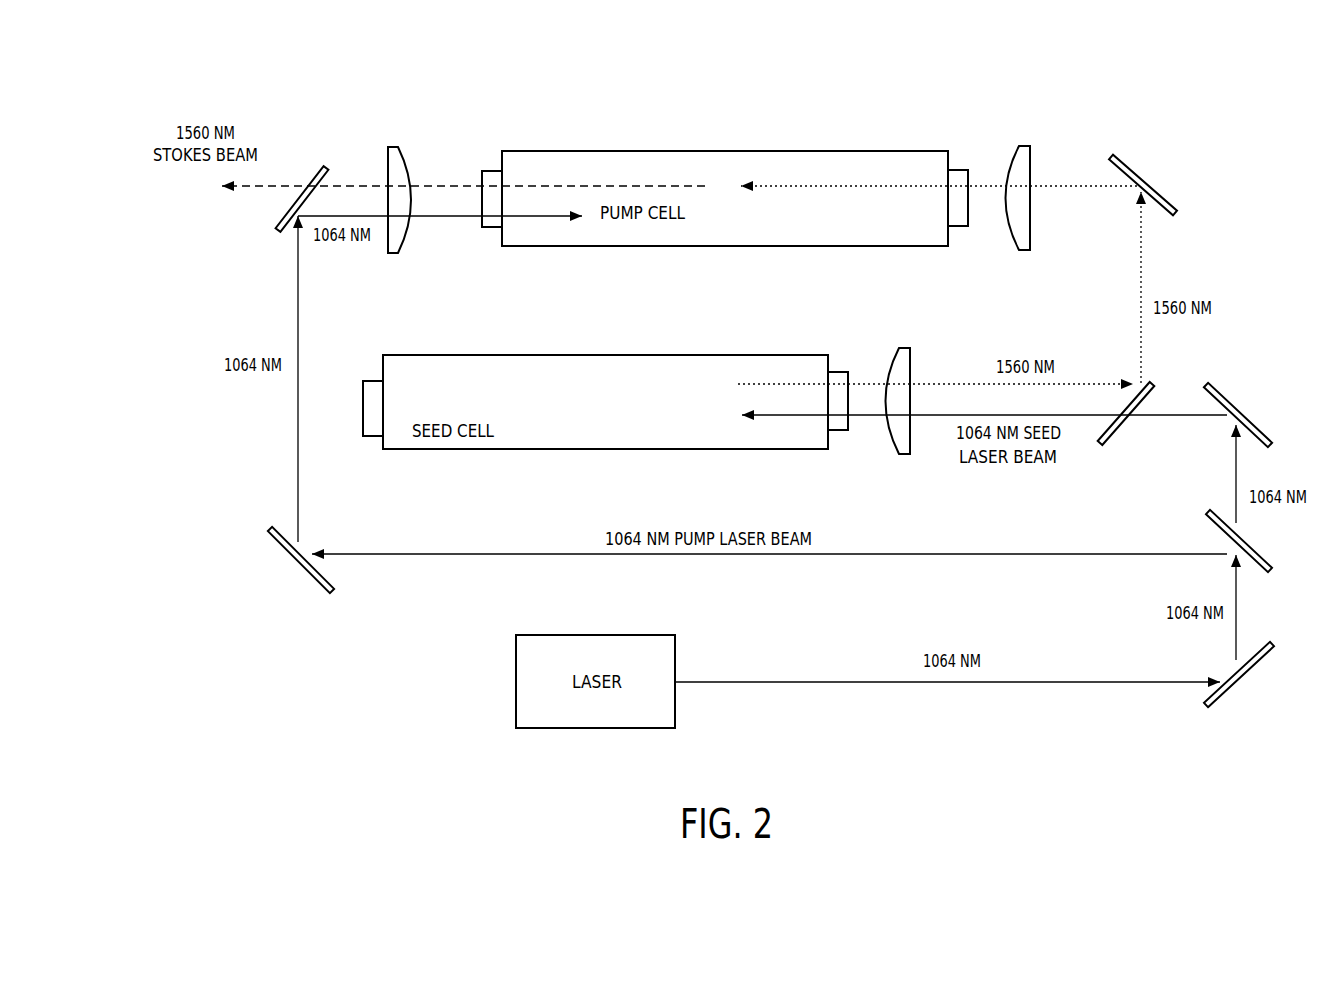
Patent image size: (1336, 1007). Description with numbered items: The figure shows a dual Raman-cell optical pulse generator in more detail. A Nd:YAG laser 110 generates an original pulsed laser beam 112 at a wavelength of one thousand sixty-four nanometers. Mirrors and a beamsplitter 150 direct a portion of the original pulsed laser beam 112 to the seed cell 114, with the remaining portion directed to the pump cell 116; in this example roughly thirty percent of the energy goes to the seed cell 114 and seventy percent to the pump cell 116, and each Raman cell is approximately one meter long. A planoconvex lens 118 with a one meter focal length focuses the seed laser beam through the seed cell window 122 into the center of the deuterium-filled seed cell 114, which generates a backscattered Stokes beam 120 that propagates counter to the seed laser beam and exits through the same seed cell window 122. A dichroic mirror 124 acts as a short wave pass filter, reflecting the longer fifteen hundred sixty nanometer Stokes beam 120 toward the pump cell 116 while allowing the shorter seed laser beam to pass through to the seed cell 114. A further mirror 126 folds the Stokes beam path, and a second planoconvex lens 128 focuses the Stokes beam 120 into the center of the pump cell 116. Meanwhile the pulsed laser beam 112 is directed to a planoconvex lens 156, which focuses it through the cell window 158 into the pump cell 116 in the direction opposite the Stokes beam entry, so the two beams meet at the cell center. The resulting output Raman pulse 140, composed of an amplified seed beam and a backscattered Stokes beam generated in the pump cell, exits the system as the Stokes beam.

The Nd:YAG laser 110 is at (516, 683).
The original pulsed laser beam 112 is at (862, 684).
The seed cell 114 is at (597, 366).
The pump cell 116 is at (710, 232).
The planoconvex lens 118 is at (897, 455).
The Stokes beam 120 is at (938, 382).
The seed cell window 122 is at (840, 376).
The dichroic mirror 124 is at (1120, 432).
The mirror 126 is at (1160, 191).
The second planoconvex lens 128 is at (1022, 146).
The output Raman pulse 140 is at (295, 181).
The beamsplitter 150 is at (1207, 515).
The planoconvex lens 156 is at (283, 222).
The cell window 158 is at (495, 227).